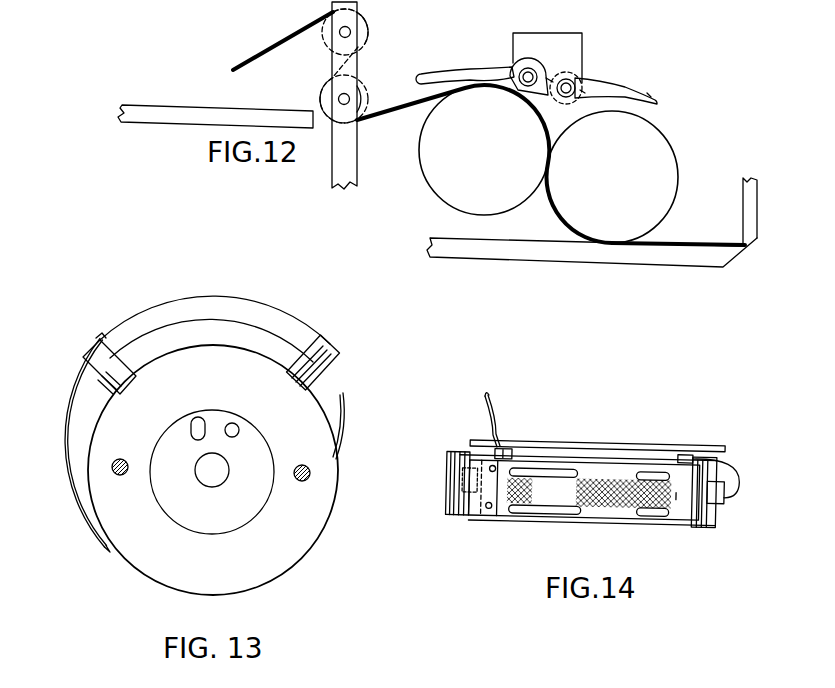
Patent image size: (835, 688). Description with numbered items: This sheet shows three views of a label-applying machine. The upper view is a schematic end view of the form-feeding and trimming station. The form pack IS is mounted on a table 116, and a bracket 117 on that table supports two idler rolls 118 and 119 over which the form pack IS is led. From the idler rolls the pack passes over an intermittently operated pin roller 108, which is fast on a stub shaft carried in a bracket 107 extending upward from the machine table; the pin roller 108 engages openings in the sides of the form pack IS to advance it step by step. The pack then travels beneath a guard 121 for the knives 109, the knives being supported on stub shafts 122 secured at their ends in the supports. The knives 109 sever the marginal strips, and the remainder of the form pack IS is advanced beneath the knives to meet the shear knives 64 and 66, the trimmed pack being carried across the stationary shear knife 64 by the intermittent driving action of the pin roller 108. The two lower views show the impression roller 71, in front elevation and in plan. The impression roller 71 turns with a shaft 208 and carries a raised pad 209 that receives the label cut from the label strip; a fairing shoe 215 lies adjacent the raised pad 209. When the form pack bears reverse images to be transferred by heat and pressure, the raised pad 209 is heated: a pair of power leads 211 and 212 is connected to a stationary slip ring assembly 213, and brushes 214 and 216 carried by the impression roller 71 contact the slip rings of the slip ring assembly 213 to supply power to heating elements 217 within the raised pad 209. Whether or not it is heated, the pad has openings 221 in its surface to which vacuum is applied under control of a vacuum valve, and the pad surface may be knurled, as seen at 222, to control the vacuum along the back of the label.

In FIG. 12, the table 116 is at (175, 112).
In FIG. 12, the bracket 117 is at (352, 75).
In FIG. 12, the idler roll 118 is at (352, 31).
In FIG. 12, the idler roll 119 is at (358, 122).
In FIG. 12, the form pack IS is at (411, 99).
In FIG. 12, the pin roller 108 is at (435, 170).
In FIG. 12, the knife 109 is at (655, 157).
In FIG. 12, the guard 121 is at (463, 78).
In FIG. 12, the stub shaft 122 is at (580, 80).
In FIG. 12, the bracket 107 is at (584, 35).
In FIG. 12, the stationary shear knife 64 is at (703, 253).
In FIG. 12, the shear knife 66 is at (752, 217).
In FIG. 13, the impression roller 71 is at (252, 575).
In FIG. 14, the impression roller 71 is at (712, 530).
In FIG. 13, the shaft 208 is at (215, 480).
In FIG. 13, the heating element 217 is at (222, 325).
In FIG. 13, the raised pad 209 is at (278, 352).
In FIG. 14, the raised pad 209 is at (555, 515).
In FIG. 13, the fairing shoe 215 is at (73, 408).
In FIG. 13, the brush 214 is at (128, 475).
In FIG. 14, the brush 214 is at (513, 457).
In FIG. 13, the brush 216 is at (312, 473).
In FIG. 14, the brush 216 is at (692, 456).
In FIG. 14, the slip ring assembly 213 is at (503, 450).
In FIG. 14, the opening 221 is at (572, 468).
In FIG. 14, the knurled surface 222 is at (510, 492).
In FIG. 14, the power lead 211 is at (497, 445).
In FIG. 14, the power lead 212 is at (485, 395).